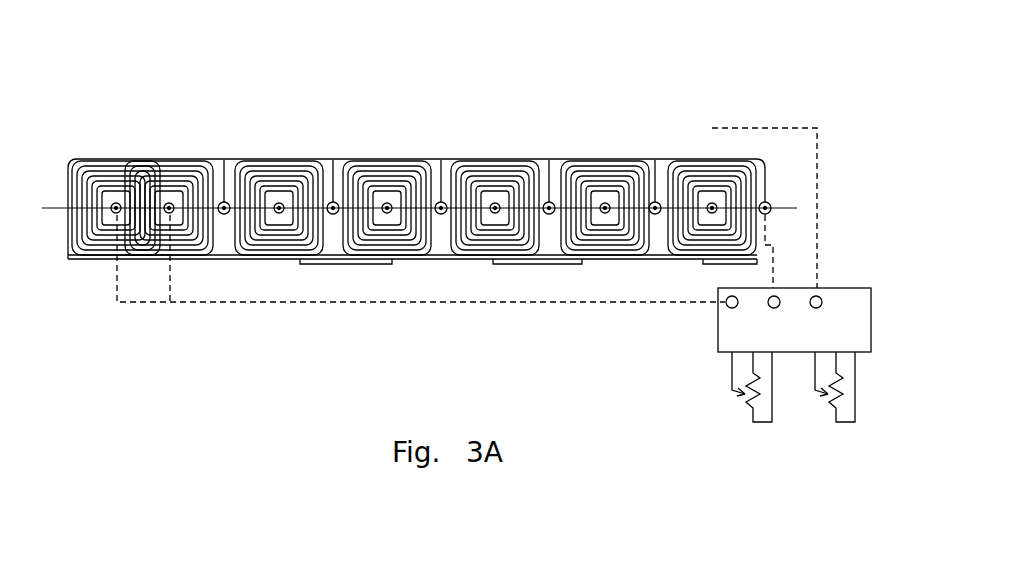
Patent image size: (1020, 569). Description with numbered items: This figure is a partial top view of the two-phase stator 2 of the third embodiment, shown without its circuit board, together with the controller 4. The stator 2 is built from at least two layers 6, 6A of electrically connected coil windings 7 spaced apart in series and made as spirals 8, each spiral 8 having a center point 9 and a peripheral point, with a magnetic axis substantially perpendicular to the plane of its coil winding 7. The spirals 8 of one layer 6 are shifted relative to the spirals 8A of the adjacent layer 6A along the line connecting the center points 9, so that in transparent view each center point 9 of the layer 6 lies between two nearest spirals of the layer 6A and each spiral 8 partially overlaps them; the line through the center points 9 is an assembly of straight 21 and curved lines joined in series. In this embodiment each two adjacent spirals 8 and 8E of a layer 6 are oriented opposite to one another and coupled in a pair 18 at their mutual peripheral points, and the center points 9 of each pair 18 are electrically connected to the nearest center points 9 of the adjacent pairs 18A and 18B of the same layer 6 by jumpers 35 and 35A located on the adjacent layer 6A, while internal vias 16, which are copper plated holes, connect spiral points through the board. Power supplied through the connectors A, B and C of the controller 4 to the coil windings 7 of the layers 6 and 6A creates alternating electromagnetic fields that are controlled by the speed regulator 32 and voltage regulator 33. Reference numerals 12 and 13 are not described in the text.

The stator 2 is at (780, 170).
The controller 4 is at (848, 296).
The layer 6 is at (190, 187).
The adjacent layer 6A is at (160, 252).
The coil winding 7 is at (300, 180).
The spiral 8 is at (128, 172).
The spiral of adjacent layer 8A is at (343, 175).
The adjacent spiral 8E is at (512, 187).
The center point 9 is at (278, 198).
The substrate 12 is at (100, 248).
The coil 13 is at (751, 149).
The straight line 21 is at (690, 207).
The via 16 is at (595, 190).
The pair 18 is at (415, 257).
The adjacent pair 18A is at (233, 252).
The adjacent pair 18B is at (665, 255).
The speed regulator 32 is at (760, 438).
The voltage regulator 33 is at (843, 438).
The jumper 35 is at (285, 258).
The jumper 35A is at (580, 262).